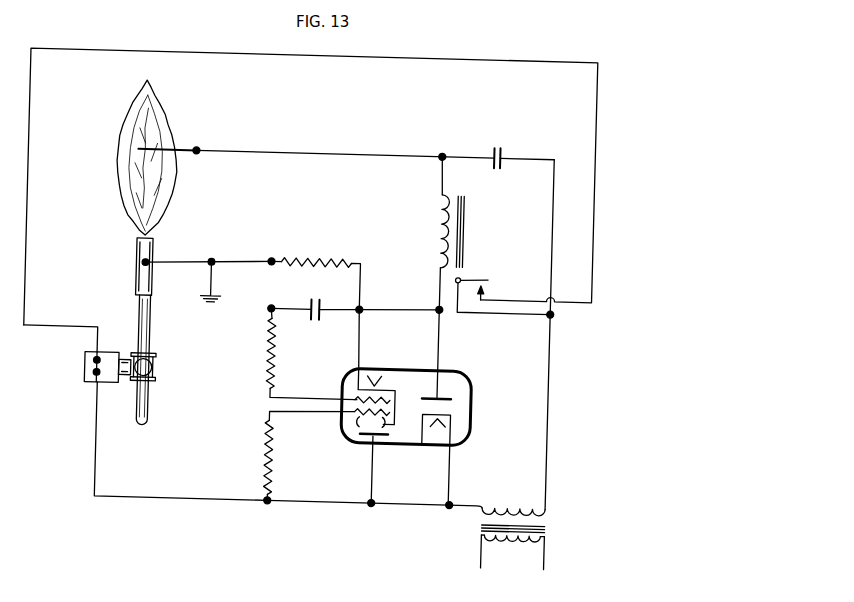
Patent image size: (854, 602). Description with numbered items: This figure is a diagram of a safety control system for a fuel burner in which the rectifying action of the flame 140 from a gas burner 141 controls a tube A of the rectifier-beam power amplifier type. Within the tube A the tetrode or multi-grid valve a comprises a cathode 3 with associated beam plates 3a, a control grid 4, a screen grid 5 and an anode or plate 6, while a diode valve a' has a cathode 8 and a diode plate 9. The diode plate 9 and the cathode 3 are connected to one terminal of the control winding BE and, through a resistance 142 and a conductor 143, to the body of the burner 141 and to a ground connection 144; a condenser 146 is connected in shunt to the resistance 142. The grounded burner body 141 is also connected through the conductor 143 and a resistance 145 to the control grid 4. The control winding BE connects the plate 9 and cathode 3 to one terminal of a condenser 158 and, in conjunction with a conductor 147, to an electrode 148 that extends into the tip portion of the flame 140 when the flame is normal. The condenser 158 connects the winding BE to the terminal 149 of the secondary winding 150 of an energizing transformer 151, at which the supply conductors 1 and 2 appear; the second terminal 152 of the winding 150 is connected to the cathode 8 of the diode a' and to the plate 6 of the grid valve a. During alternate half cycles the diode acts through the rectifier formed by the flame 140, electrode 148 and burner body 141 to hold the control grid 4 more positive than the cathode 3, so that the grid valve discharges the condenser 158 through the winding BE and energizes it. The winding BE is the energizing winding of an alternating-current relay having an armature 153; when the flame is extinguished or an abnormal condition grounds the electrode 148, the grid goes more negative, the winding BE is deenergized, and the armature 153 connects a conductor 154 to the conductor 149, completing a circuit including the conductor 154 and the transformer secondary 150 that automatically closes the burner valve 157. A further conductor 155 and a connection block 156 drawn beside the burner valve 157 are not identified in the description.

The conductor 154 is at (158, 45).
The return conductor 155 is at (103, 461).
The terminal block 156 is at (88, 367).
The burner valve 157 is at (168, 364).
The gas burner 141 is at (142, 269).
The flame 140 is at (131, 101).
The electrode 148 is at (186, 143).
The conductor 147 is at (302, 145).
The condenser 158 is at (503, 138).
The terminal of the secondary winding 149 is at (557, 198).
The control winding BE is at (445, 219).
The armature 153 is at (486, 267).
The conductor 143 is at (181, 258).
The ground connection 144 is at (211, 293).
The resistance 142 is at (327, 248).
The condenser 146 is at (324, 291).
The resistance 145 is at (270, 339).
The tube A is at (438, 357).
The cathode 3 is at (393, 380).
The control grid 4 is at (369, 389).
The tetrode valve a is at (337, 391).
The screen grid 5 is at (366, 404).
The beam plates 3a is at (367, 416).
The anode or plate 6 is at (375, 431).
The diode plate 9 is at (459, 384).
The cathode of the diode valve 8 is at (440, 432).
The diode valve a' is at (472, 409).
The secondary winding 150 is at (534, 492).
The energizing transformer 151 is at (560, 514).
The second terminal of the secondary winding 152 is at (484, 498).
The supply conductor 1 is at (493, 550).
The supply conductor 2 is at (561, 548).